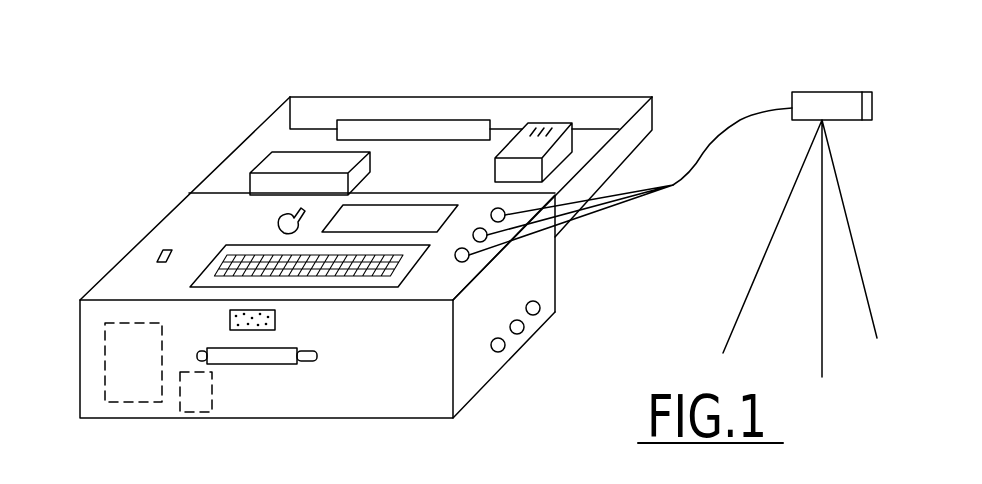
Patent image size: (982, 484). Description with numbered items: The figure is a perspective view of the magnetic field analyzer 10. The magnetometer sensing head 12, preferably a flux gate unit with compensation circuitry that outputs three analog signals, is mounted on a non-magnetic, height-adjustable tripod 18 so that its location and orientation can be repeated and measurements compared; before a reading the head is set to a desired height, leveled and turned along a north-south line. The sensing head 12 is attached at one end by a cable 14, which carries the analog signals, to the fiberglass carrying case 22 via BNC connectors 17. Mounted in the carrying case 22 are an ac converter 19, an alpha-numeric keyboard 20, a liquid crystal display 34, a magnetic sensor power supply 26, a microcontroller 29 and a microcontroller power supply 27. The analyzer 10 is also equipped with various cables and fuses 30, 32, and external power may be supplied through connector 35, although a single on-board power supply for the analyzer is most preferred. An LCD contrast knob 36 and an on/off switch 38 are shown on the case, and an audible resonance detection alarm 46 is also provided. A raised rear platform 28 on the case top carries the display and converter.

The magnetic field analyzer 10 is at (563, 73).
The magnetometer sensing head 12 is at (817, 92).
The cable 14 is at (712, 145).
The BNC connectors 17 is at (517, 227).
The non-magnetic tripod 18 is at (757, 274).
The ac converter 19 is at (589, 141).
The alpha-numeric keyboard 20 is at (357, 275).
The carrying case 22 is at (250, 397).
The magnetic sensor power supply 26 is at (236, 152).
The microcontroller power supply 27 is at (137, 403).
The rear platform 28 is at (404, 107).
The microcontroller 29 is at (195, 413).
The fuses 30 is at (550, 318).
The fuses 32 is at (513, 358).
The liquid crystal display 34 is at (360, 120).
The connector 35 is at (535, 339).
The LCD contrast knob 36 is at (270, 213).
The on/off switch 38 is at (137, 253).
The audible resonance detection alarm 46 is at (275, 320).